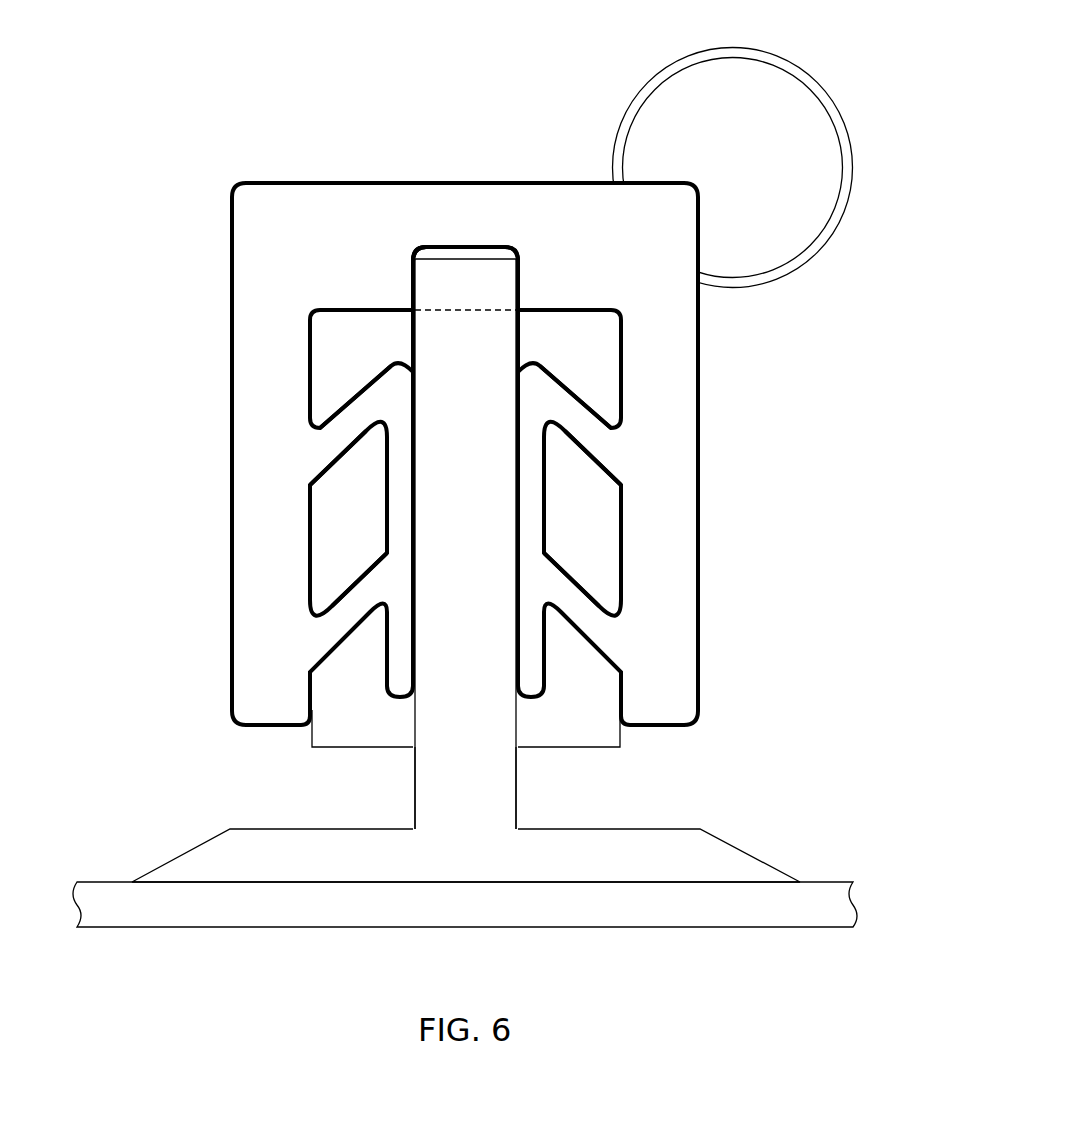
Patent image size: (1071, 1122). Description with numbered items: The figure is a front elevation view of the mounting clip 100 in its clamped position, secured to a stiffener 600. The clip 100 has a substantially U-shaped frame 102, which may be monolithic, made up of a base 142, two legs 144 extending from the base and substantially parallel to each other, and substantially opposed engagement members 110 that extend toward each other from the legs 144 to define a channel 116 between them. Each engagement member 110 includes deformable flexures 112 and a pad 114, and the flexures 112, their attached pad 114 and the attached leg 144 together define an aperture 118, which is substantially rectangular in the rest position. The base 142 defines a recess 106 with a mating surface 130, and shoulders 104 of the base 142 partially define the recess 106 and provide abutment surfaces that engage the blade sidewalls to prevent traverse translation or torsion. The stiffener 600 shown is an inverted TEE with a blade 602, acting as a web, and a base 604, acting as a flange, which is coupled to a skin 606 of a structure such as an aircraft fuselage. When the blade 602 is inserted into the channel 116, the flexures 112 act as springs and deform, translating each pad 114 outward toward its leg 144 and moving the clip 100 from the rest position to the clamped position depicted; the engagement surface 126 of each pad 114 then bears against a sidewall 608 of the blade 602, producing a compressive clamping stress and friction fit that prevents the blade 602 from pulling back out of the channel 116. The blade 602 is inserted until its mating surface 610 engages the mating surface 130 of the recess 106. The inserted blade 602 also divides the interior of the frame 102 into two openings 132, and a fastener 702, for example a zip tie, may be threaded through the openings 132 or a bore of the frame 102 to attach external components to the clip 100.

The clip 100 is at (312, 112).
The frame 102 is at (702, 307).
The shoulders 104 is at (400, 297).
The recess 106 is at (507, 310).
The engagement members 110 is at (360, 747).
The flexures 112 is at (345, 430).
The pad 114 is at (537, 440).
The channel 116 is at (463, 480).
The aperture 118 is at (370, 530).
The engagement surface 126 is at (517, 565).
The mating surface 130 is at (432, 256).
The openings 132 is at (348, 350).
The base 142 is at (342, 222).
The legs 144 is at (265, 435).
The stiffener 600 is at (465, 617).
The blade 602 is at (490, 365).
The base 604 is at (372, 874).
The skin 606 is at (485, 919).
The sidewall 608 is at (410, 789).
The mating surface 610 is at (487, 258).
The fastener 702 is at (705, 60).